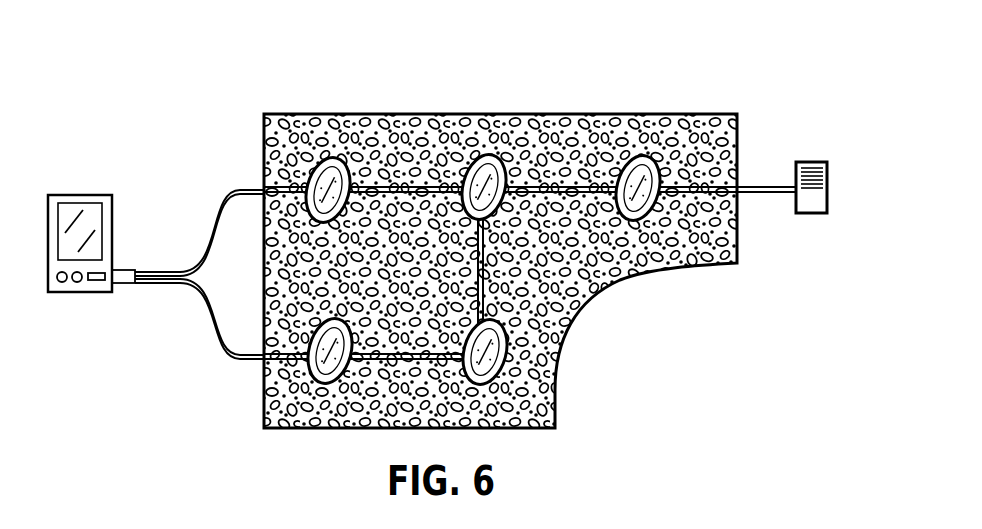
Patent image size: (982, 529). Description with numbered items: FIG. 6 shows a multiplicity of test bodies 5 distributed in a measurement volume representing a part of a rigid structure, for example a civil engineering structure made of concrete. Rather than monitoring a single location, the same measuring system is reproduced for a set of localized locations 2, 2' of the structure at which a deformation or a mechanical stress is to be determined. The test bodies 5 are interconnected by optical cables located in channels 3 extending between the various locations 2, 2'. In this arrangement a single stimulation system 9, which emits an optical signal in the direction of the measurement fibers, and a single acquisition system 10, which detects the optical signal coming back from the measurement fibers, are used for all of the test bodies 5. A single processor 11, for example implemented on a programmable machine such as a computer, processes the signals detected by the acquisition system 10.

The localized location 2 is at (490, 144).
The sensor (second group) 2' is at (407, 400).
The channels 3 is at (560, 183).
The test body 5 is at (502, 358).
The stimulation device 9 is at (817, 213).
The acquisition system 10 is at (127, 268).
The processor 11 is at (67, 293).